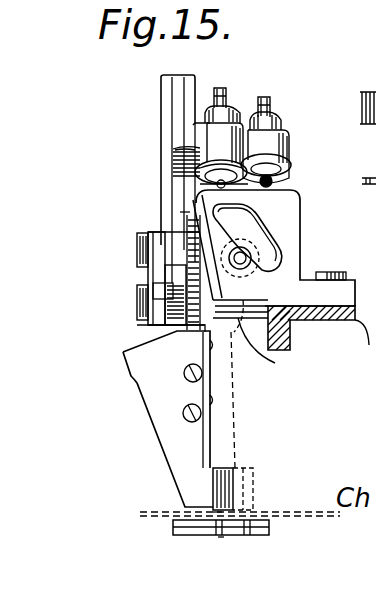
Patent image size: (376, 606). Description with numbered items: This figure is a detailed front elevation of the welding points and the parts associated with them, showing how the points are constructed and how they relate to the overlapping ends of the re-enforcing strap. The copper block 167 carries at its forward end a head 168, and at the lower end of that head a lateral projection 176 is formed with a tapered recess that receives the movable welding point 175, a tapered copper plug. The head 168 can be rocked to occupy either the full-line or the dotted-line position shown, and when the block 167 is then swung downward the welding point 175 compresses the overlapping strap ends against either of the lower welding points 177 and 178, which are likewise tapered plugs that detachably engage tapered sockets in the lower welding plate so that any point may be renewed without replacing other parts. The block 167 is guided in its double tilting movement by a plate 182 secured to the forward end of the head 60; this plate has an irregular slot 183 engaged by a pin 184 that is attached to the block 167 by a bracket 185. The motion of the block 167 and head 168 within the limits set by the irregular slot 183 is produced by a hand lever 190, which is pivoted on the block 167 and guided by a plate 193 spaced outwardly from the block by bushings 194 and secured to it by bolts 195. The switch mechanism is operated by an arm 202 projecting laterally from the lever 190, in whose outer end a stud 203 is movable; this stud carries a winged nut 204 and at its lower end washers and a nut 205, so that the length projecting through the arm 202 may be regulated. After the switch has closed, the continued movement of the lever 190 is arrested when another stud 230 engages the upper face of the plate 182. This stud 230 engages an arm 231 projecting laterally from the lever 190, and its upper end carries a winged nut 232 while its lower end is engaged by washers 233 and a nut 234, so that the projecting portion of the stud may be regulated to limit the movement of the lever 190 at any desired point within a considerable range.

The head 60 is at (320, 334).
The block 167 is at (175, 216).
The head 168 is at (150, 411).
The welding point 175 is at (217, 513).
The lateral projection 176 is at (235, 468).
The lower welding point 177 is at (220, 537).
The lower welding point 178 is at (250, 537).
The plate 182 is at (193, 200).
The irregular slot 183 is at (267, 237).
The pin 184 is at (253, 256).
The bracket 185 is at (274, 335).
The lever 190 is at (193, 140).
The plate 193 is at (150, 277).
The bushings 194 is at (156, 305).
The bolts 195 is at (140, 248).
The arm 202 is at (277, 128).
The stud 203 is at (273, 186).
The winged nut 204 is at (275, 130).
The nut 205 is at (282, 178).
The stud 230 is at (213, 183).
The arm 231 is at (160, 147).
The winged nut 232 is at (206, 112).
The washers 233 is at (220, 157).
The nut 234 is at (210, 173).